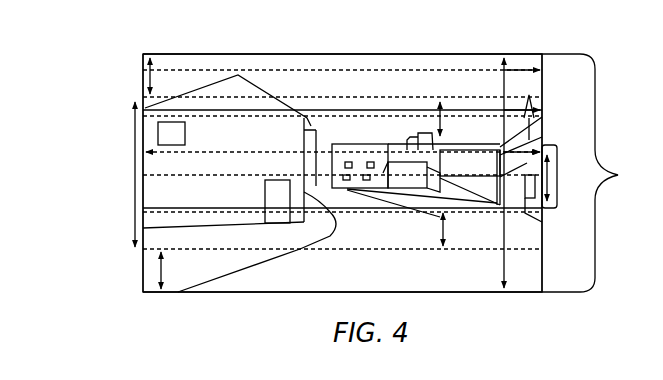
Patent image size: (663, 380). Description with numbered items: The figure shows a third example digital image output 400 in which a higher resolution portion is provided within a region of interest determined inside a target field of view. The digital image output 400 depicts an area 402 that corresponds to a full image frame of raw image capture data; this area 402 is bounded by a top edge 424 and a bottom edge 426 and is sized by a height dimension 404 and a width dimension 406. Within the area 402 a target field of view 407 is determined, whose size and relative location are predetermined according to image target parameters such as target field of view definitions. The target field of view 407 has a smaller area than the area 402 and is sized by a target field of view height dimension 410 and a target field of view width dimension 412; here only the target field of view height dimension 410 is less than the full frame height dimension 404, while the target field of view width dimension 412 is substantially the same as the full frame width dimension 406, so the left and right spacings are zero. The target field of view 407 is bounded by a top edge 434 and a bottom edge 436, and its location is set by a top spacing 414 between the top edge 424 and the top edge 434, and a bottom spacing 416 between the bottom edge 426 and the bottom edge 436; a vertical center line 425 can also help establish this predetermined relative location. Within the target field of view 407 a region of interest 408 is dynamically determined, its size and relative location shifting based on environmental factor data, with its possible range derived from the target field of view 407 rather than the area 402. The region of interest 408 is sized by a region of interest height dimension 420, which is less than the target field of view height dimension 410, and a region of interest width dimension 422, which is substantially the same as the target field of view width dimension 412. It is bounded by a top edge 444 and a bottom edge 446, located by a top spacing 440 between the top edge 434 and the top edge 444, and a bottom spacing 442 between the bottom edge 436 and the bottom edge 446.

The digital image output 400 is at (422, 36).
The area 402 is at (602, 173).
The height dimension 404 is at (538, 98).
The width dimension 406 is at (503, 82).
The target field of view 407 is at (131, 174).
The region of interest 408 is at (550, 175).
The target field of view height dimension 410 is at (139, 128).
The target field of view width dimension 412 is at (276, 138).
The top spacing 414 is at (151, 88).
The bottom spacing 416 is at (166, 268).
The region of interest height dimension 420 is at (558, 172).
The region of interest width dimension 422 is at (440, 153).
The top edge 424 is at (205, 54).
The vertical center line 425 is at (218, 175).
The bottom edge 426 is at (392, 292).
The top edge 434 is at (283, 97).
The bottom edge 436 is at (388, 249).
The top spacing 440 is at (443, 118).
The bottom spacing 442 is at (446, 237).
The top edge 444 is at (325, 143).
The bottom edge 446 is at (393, 208).